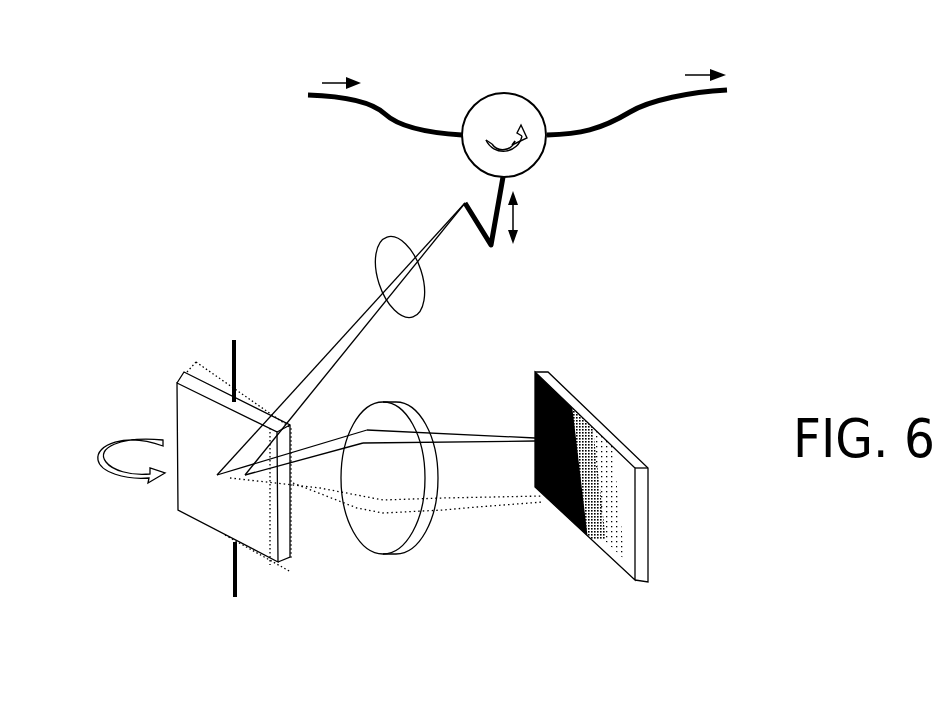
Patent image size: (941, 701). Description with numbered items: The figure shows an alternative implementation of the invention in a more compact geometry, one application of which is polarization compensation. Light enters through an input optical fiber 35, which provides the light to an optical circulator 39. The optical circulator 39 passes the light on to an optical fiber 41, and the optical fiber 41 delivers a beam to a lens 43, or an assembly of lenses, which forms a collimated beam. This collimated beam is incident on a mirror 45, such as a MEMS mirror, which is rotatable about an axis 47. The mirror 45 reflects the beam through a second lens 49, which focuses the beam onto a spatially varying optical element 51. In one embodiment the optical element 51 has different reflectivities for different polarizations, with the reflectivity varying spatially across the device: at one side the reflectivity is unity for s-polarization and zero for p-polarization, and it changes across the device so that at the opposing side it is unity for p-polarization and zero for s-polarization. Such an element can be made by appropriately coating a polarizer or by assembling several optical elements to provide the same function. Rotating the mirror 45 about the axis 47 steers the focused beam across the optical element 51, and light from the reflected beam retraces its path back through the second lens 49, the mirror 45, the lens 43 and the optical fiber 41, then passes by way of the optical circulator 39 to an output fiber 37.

The input optical fiber 35 is at (330, 98).
The output fiber 37 is at (700, 92).
The optical circulator 39 is at (503, 93).
The optical fiber 41 is at (493, 247).
The lens 43 is at (377, 250).
The mirror 45 is at (172, 435).
The axis 47 is at (228, 350).
The second lens 49 is at (383, 557).
The spatially varying optical element 51 is at (577, 400).